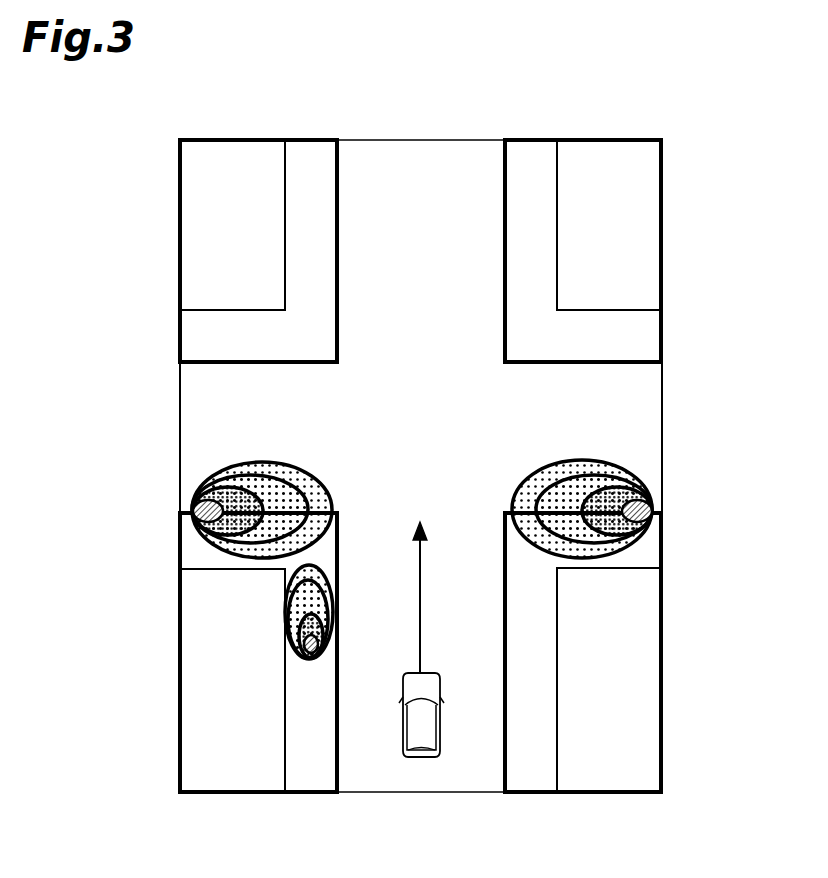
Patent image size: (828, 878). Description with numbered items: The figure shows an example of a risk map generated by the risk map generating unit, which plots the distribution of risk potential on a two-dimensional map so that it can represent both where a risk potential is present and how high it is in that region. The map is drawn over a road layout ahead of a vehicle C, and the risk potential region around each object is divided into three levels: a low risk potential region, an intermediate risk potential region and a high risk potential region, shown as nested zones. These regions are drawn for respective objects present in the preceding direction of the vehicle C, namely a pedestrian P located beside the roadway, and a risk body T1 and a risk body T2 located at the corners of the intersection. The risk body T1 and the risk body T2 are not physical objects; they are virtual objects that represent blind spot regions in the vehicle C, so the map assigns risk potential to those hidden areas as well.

The risk body T1 is at (197, 512).
The risk body T2 is at (648, 510).
The pedestrian P is at (308, 647).
The vehicle C is at (422, 760).